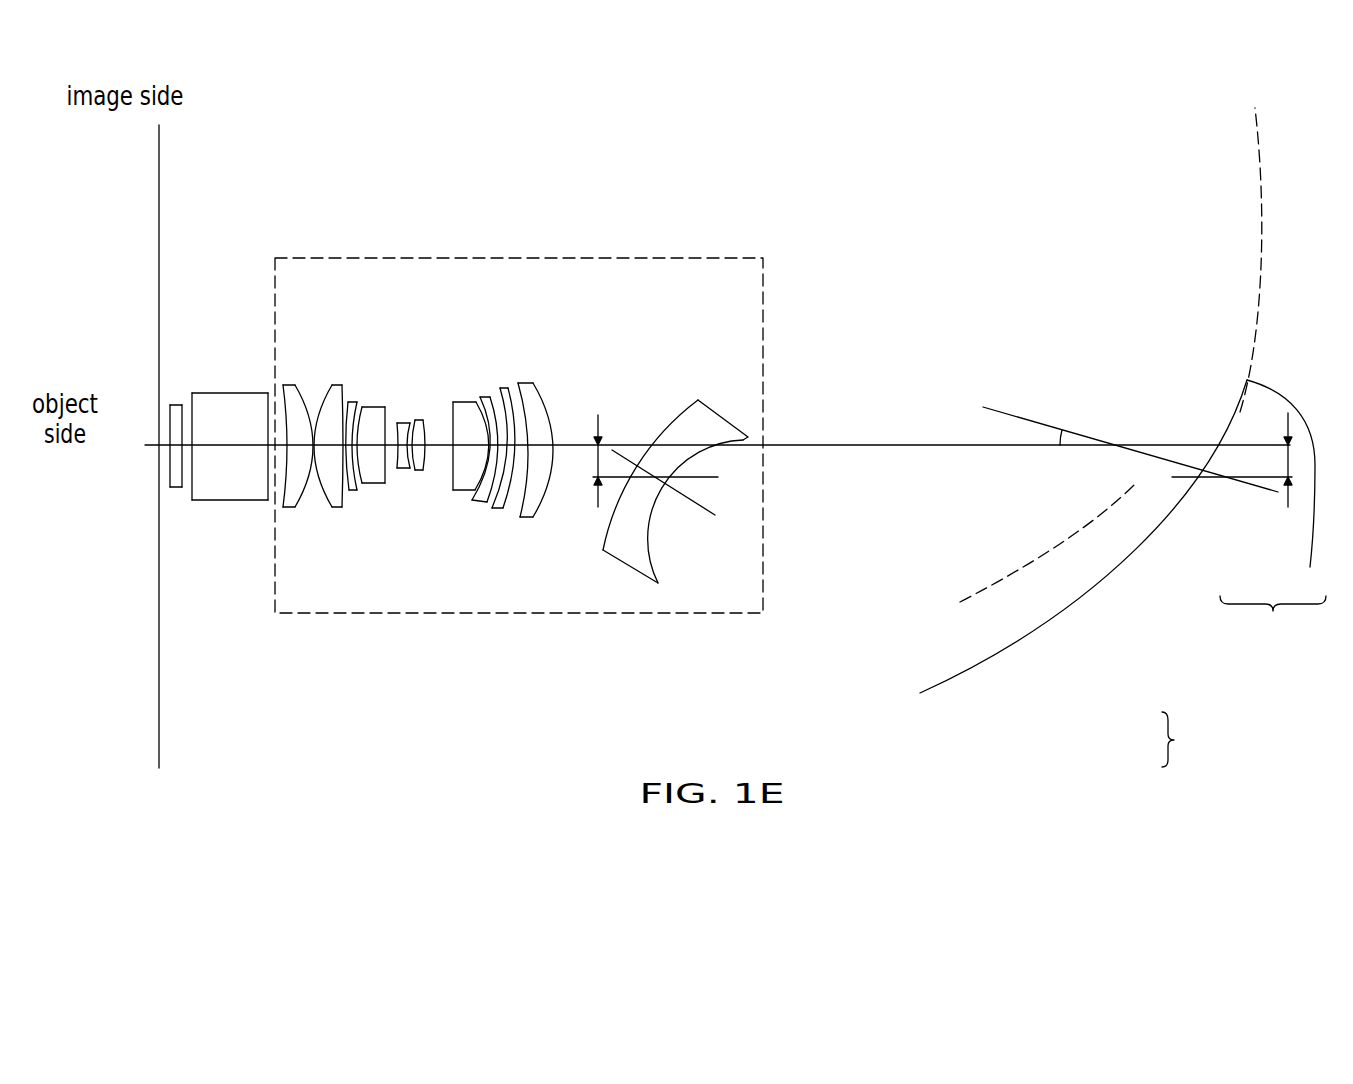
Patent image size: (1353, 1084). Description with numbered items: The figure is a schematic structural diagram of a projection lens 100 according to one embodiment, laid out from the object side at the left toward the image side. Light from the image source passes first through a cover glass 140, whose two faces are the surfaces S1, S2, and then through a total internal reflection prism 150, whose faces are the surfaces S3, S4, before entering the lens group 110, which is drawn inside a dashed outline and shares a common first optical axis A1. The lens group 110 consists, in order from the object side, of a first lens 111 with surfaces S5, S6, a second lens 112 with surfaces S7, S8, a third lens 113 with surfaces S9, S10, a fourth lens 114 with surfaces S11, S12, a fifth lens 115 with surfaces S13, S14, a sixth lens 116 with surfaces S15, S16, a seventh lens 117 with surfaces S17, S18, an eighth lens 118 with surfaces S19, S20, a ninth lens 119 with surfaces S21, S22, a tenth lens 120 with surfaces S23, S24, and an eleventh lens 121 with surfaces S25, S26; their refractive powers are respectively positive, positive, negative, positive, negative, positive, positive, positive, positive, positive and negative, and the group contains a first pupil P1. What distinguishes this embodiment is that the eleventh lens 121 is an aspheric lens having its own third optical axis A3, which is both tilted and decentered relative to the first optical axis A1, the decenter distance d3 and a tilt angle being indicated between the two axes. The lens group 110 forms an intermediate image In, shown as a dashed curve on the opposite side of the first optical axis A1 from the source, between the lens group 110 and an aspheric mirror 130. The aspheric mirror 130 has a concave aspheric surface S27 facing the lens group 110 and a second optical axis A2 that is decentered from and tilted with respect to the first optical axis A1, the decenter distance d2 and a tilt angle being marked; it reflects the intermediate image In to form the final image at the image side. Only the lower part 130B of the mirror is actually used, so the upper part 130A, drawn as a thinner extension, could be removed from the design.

The projection lens 100 is at (1167, 738).
The lens group 110 is at (665, 256).
The first lens 111 is at (294, 432).
The second lens 112 is at (330, 430).
The third lens 113 is at (365, 441).
The fourth lens 114 is at (393, 429).
The fifth lens 115 is at (404, 479).
The sixth lens 116 is at (440, 445).
The seventh lens 117 is at (456, 419).
The eighth lens 118 is at (497, 429).
The ninth lens 119 is at (530, 415).
The tenth lens 120 is at (563, 425).
The eleventh lens 121 is at (681, 481).
The aspheric mirror 130 is at (1103, 536).
The upper part of the aspheric mirror 130A is at (1289, 488).
The lower part of the aspheric mirror 130B is at (1067, 536).
The cover glass 140 is at (163, 428).
The total internal reflection prism 150 is at (235, 439).
The first optical axis A1 is at (708, 463).
The second optical axis A2 is at (1115, 449).
The third optical axis A3 is at (668, 494).
The first pupil P1 is at (425, 423).
The decenter distance d2 is at (1243, 460).
The decenter distance d3 is at (638, 461).
The intermediate image In is at (1109, 355).
The surface of the cover glass S1 is at (170, 406).
The surface of the cover glass S2 is at (184, 406).
The surface of the total internal reflection prism S3 is at (192, 400).
The surface of the total internal reflection prism S4 is at (283, 392).
The surface of the first lens S5 is at (285, 390).
The surface of the first lens S6 is at (297, 390).
The surface of the second lens S7 is at (331, 389).
The surface of the second lens S8 is at (342, 391).
The surface of the third lens S9 is at (350, 403).
The surface of the third lens S10 is at (362, 409).
The surface of the fourth lens S11 is at (381, 408).
The surface of the fourth lens S12 is at (387, 412).
The surface of the fifth lens S13 is at (398, 424).
The surface of the fifth lens S14 is at (407, 469).
The surface of the sixth lens S15 is at (418, 471).
The surface of the sixth lens S16 is at (455, 407).
The surface of the seventh lens S17 is at (475, 402).
The surface of the seventh lens S18 is at (481, 398).
The surface of the eighth lens S19 is at (490, 398).
The surface of the eighth lens S20 is at (500, 392).
The surface of the ninth lens S21 is at (509, 388).
The surface of the ninth lens S22 is at (519, 386).
The surface of the tenth lens S23 is at (534, 385).
The surface of the tenth lens S24 is at (545, 392).
The surface of the eleventh lens S25 is at (673, 418).
The surface of the eleventh lens S26 is at (722, 443).
The aspheric surface S27 is at (975, 668).